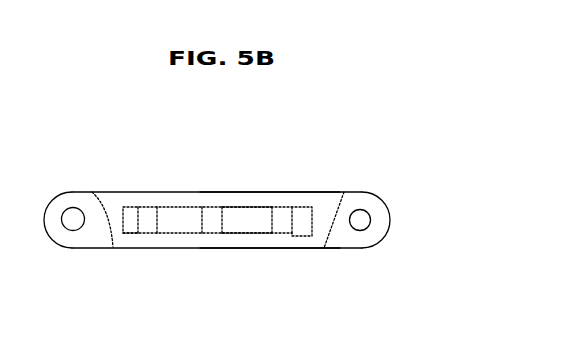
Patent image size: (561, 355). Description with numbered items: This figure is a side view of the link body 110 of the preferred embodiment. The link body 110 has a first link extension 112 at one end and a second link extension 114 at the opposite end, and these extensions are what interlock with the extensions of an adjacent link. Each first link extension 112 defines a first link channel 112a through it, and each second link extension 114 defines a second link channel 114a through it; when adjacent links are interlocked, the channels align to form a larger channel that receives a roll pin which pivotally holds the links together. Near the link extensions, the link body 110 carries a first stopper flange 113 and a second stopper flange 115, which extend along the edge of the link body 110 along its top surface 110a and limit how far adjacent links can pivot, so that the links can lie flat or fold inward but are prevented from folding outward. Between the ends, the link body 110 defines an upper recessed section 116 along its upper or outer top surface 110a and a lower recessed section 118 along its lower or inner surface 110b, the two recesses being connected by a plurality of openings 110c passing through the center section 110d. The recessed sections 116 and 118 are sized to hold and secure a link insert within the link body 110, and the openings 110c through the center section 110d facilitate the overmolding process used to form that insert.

The link body 110 is at (135, 128).
The top surface 110a is at (328, 192).
The lower surface 110b is at (320, 249).
The openings 110c is at (284, 217).
The center section 110d is at (240, 218).
The first link extension 112 is at (53, 228).
The first link channel 112a is at (75, 222).
The first stopper flange 113 is at (97, 191).
The second link extension 114 is at (375, 205).
The second link channel 114a is at (362, 223).
The second stopper flange 115 is at (345, 192).
The upper recessed section 116 is at (126, 200).
The lower recessed section 118 is at (133, 241).